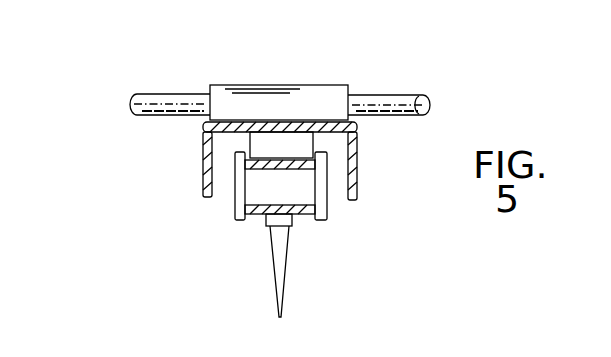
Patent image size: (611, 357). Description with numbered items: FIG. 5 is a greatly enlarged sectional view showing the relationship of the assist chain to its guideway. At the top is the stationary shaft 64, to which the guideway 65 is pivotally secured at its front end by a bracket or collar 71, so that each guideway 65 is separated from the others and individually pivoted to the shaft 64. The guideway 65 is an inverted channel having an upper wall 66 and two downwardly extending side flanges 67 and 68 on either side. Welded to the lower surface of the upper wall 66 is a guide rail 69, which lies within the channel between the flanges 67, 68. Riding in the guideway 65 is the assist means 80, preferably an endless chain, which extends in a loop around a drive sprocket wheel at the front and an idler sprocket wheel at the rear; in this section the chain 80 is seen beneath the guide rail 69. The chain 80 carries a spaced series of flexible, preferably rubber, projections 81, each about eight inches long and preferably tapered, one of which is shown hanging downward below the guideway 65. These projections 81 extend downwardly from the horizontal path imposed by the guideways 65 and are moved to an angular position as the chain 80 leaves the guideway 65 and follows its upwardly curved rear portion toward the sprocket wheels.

The stationary shaft 64 is at (407, 112).
The guideway 65 is at (280, 131).
The upper wall 66 is at (226, 121).
The side flange 67 is at (203, 165).
The side flange 68 is at (355, 176).
The guide rail 69 is at (280, 156).
The bracket or collar 71 is at (294, 101).
The assist means 80 is at (302, 215).
The flexible projection 81 is at (283, 278).